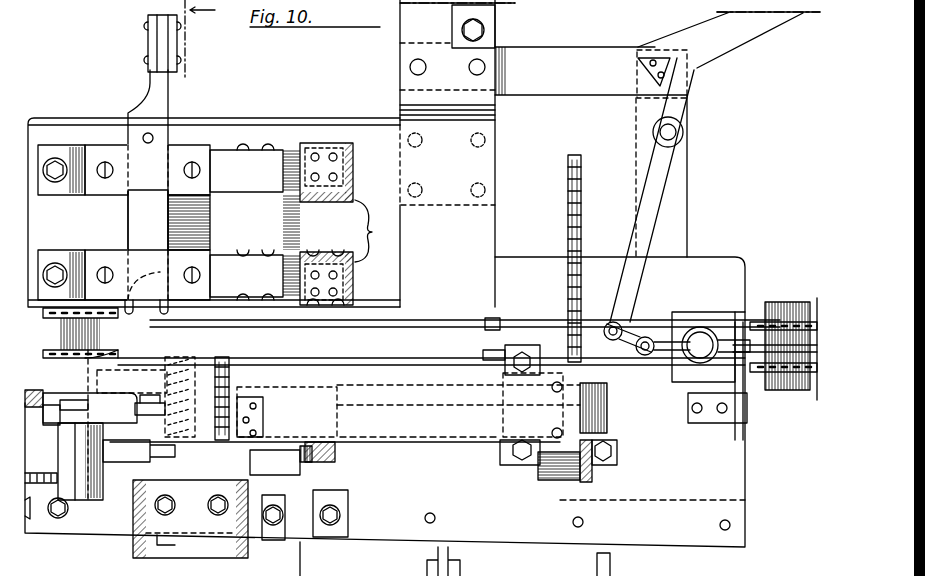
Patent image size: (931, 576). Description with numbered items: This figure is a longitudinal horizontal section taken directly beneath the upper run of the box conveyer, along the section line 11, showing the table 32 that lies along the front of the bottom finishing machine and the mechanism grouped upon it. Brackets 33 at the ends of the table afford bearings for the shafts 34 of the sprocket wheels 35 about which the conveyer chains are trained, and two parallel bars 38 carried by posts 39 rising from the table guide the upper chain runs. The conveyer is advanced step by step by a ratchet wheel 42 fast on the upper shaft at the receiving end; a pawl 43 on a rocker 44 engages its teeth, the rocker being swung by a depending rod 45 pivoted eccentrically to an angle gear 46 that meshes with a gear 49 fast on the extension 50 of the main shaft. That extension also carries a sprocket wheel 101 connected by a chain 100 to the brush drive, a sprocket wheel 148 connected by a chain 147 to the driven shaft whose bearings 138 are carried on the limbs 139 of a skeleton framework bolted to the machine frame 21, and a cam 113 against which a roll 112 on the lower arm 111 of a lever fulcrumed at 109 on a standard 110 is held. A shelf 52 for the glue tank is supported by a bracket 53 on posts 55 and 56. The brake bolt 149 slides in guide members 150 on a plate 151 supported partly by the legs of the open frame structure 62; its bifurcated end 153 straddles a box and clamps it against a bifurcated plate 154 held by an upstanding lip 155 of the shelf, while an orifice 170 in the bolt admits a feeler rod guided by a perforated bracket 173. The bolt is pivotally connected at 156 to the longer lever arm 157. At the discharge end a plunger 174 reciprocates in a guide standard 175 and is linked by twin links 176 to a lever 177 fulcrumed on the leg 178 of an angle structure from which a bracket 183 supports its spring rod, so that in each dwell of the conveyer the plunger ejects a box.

The section line 11 is at (150, 538).
The machine frame 21 is at (479, 229).
The table 32 is at (712, 262).
The brackets 33 is at (745, 398).
The shafts 34 is at (85, 300).
The sprocket wheels 35 is at (770, 320).
The parallel bars 38 is at (442, 330).
The posts 39 is at (505, 350).
The ratchet wheel 42 is at (55, 415).
The pawl 43 is at (150, 360).
The rocker 44 is at (84, 437).
The depending rod 45 is at (165, 515).
The angle gear 46 is at (160, 415).
The gear 49 is at (205, 348).
The main shaft extension 50 is at (614, 407).
The shelf 52 is at (481, 443).
The bracket 53 is at (263, 396).
The post 55 is at (580, 482).
The post 56 is at (283, 528).
The open frame structure 62 is at (351, 224).
The chain 100 is at (240, 490).
The sprocket wheel 101 is at (232, 362).
The fulcrum 109 is at (314, 559).
The standard 110 is at (318, 525).
The lower arm 111 is at (345, 470).
The roll 112 is at (312, 455).
The cam 113 is at (350, 465).
The bearings 138 is at (497, 18).
The limbs 139 is at (495, 108).
The chain 147 is at (575, 155).
The sprocket wheel 148 is at (583, 378).
The bolt 149 is at (148, 93).
The guide members 150 is at (188, 190).
The plate 151 is at (52, 115).
The bifurcated end 153 is at (175, 285).
The bifurcated plate 154 is at (130, 298).
The upstanding lip 155 is at (105, 365).
The pivotal connection 156 is at (138, 25).
The lever arm 157 is at (175, 36).
The orifice 170 is at (152, 135).
The perforated bracket 173 is at (455, 566).
The plunger 174 is at (680, 345).
The guide standard 175 is at (745, 425).
The twin links 176 is at (635, 335).
The lever 177 is at (652, 188).
The leg 178 is at (688, 150).
The bracket 183 is at (757, 32).